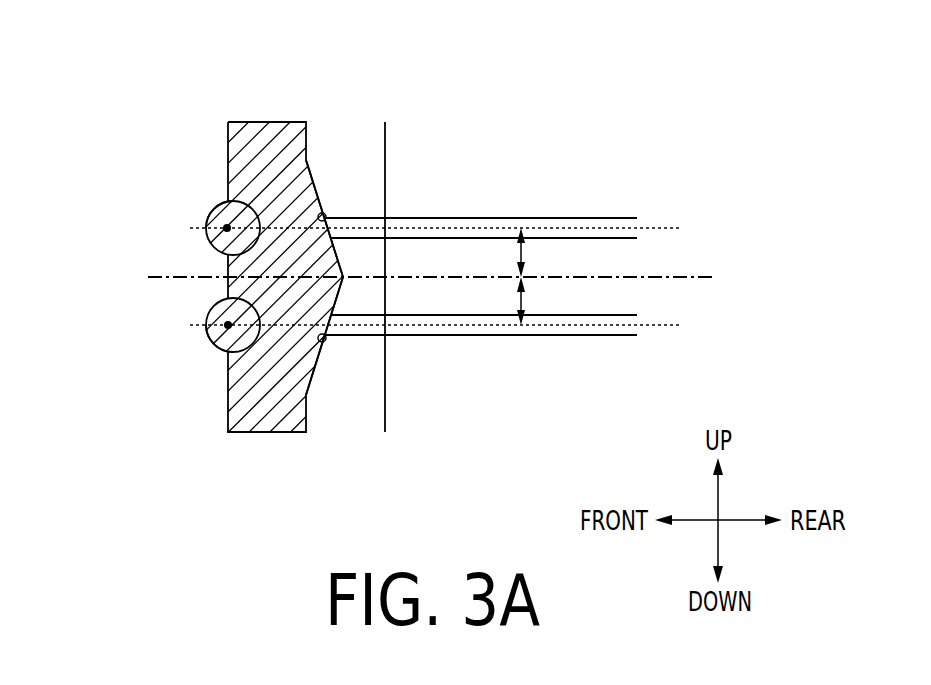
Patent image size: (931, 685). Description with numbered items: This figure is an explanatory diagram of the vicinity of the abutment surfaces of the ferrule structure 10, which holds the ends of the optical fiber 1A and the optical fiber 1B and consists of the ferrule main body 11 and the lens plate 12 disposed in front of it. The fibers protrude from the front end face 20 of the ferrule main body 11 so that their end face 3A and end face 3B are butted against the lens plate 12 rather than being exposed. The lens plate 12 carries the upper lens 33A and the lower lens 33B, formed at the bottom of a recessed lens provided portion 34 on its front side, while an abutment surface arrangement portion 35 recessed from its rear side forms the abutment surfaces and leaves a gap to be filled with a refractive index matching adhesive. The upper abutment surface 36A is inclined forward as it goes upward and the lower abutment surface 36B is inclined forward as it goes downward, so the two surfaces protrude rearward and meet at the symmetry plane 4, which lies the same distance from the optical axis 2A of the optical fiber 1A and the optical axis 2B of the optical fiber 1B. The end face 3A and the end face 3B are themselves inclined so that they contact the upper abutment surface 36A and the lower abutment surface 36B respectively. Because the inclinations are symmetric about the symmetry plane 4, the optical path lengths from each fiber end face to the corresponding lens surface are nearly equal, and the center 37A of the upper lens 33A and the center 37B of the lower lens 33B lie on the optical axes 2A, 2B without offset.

The ferrule structure 10 is at (362, 263).
The ferrule main body 11 is at (435, 222).
The lens plate 12 is at (362, 263).
The front end face 20 is at (385, 138).
The optical fiber 1A is at (455, 218).
The optical fiber 1B is at (455, 335).
The optical axis 2A is at (663, 228).
The optical axis 2B is at (663, 325).
The end face 3A is at (327, 220).
The end face 3B is at (322, 342).
The symmetry plane 4 is at (162, 277).
The upper lens 33A is at (207, 214).
The lower lens 33B is at (205, 338).
The lens provided portion 34 is at (228, 128).
The abutment surface arrangement portion 35 is at (308, 420).
The upper abutment surface 36A is at (321, 208).
The lower abutment surface 36B is at (313, 373).
The center of the upper lens 37A is at (222, 203).
The center of the lower lens 37B is at (224, 352).